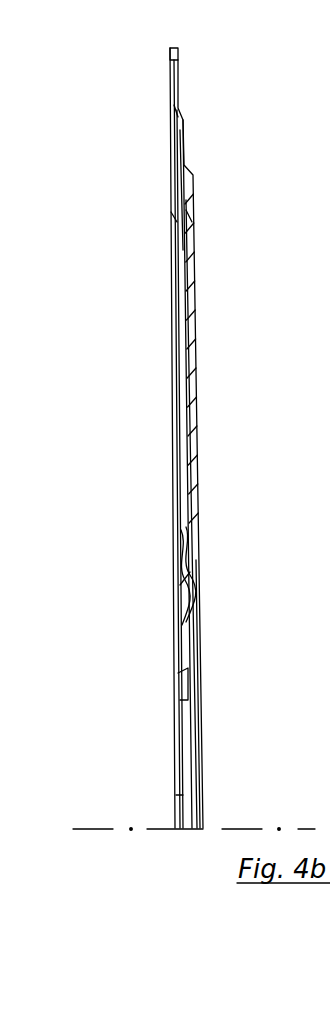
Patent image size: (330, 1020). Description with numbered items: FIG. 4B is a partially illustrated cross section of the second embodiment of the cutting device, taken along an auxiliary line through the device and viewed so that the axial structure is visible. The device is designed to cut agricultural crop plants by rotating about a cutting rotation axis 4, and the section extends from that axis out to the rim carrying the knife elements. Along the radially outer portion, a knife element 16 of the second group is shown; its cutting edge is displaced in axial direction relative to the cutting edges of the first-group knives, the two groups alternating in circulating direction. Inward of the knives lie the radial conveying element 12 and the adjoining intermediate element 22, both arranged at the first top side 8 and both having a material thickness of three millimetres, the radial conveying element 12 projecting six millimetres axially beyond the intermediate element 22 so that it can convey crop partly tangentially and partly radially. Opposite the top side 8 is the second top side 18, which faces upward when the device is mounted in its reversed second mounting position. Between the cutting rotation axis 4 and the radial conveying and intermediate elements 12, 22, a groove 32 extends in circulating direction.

The cutting rotation axis 4 is at (243, 828).
The top side 8 is at (202, 222).
The radial conveying element 12 is at (190, 300).
The knife element 16 is at (178, 55).
The second top side 18 is at (164, 224).
The intermediate element 22 is at (187, 360).
The groove 32 is at (193, 572).